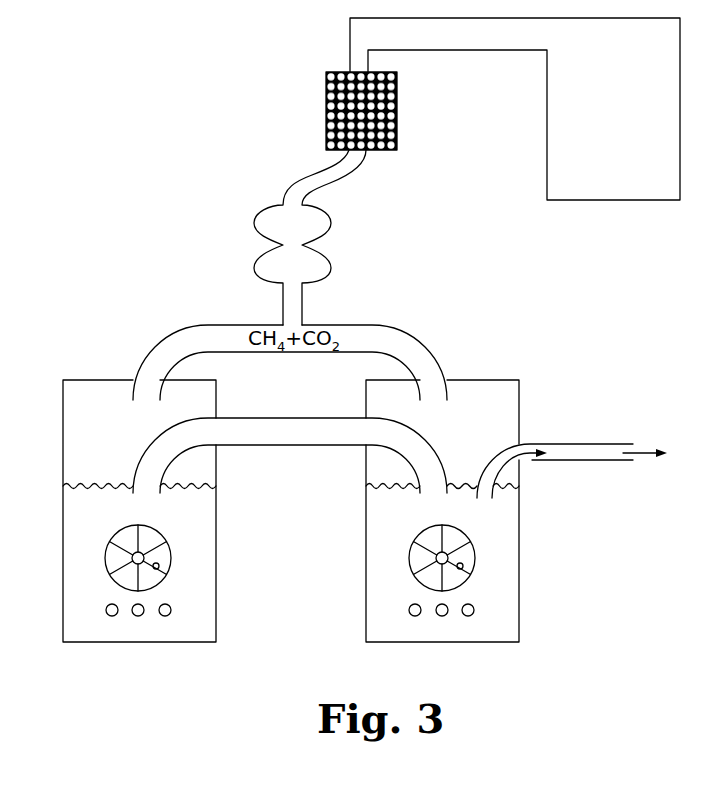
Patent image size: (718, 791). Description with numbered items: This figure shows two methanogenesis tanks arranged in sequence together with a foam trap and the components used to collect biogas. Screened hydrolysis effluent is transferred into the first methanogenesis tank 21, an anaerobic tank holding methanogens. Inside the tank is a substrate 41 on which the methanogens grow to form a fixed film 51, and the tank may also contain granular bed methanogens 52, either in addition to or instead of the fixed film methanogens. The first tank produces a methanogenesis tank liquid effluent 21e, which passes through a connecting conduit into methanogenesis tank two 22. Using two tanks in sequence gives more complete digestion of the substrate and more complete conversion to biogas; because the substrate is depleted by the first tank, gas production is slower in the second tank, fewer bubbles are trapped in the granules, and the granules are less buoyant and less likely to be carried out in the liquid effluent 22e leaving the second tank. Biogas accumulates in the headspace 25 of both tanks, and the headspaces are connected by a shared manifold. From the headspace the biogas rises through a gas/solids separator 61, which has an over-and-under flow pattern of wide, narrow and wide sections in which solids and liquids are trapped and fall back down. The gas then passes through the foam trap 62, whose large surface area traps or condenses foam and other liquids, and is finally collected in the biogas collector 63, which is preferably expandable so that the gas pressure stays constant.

The methanogenesis tank 21 is at (127, 622).
The methanogenesis tank two 22 is at (430, 622).
The headspace 25 is at (91, 431).
The methanogenesis tank liquid effluent 21e is at (282, 428).
The liquid effluent 22e is at (598, 452).
The substrate 41 is at (105, 563).
The fixed film methanogens 51 is at (159, 566).
The granular bed methanogens 52 is at (171, 610).
The gas/solids separator 61 is at (233, 177).
The foam trap 62 is at (397, 103).
The biogas collector 63 is at (600, 111).